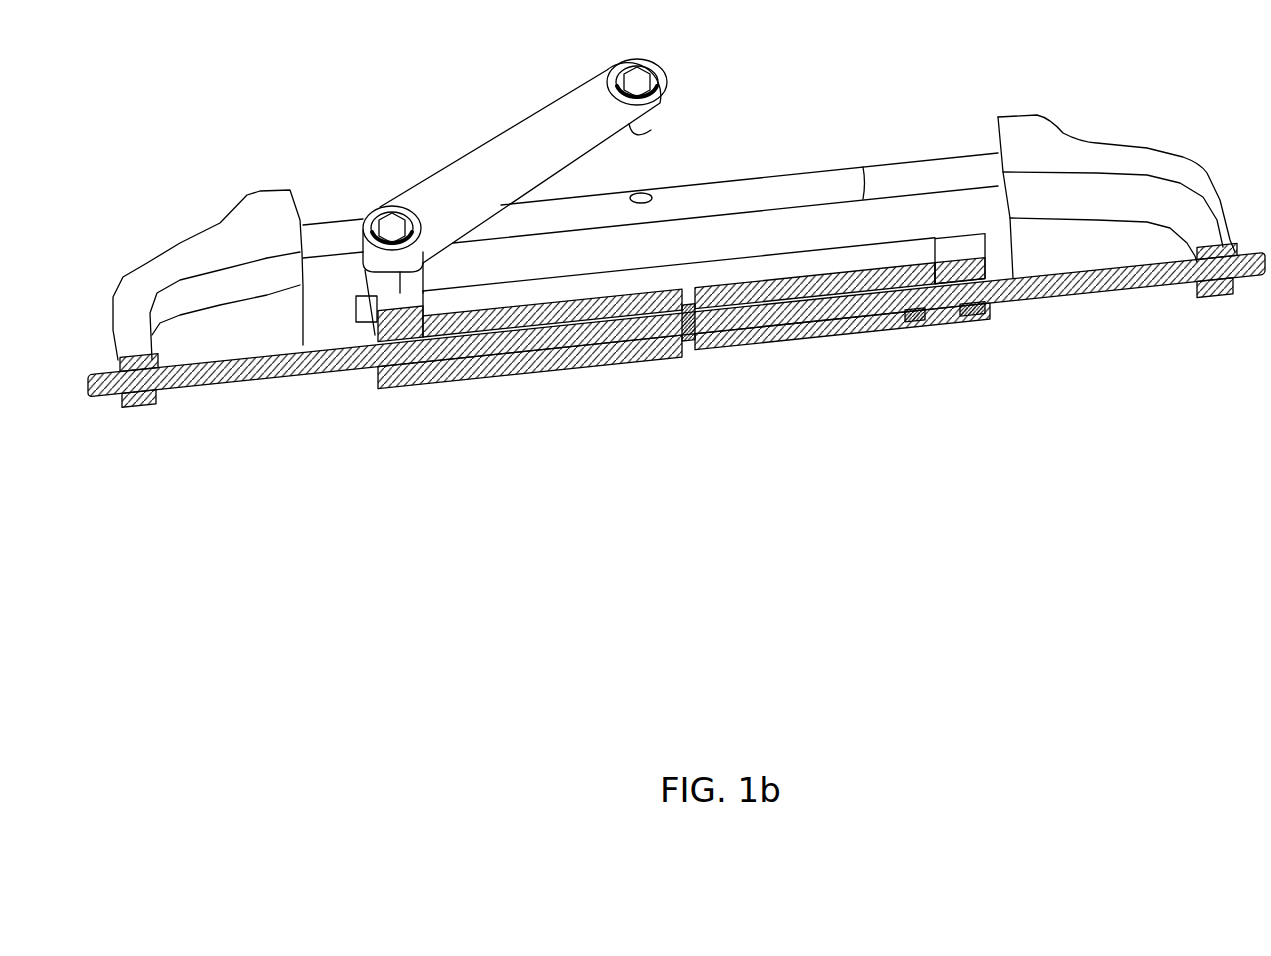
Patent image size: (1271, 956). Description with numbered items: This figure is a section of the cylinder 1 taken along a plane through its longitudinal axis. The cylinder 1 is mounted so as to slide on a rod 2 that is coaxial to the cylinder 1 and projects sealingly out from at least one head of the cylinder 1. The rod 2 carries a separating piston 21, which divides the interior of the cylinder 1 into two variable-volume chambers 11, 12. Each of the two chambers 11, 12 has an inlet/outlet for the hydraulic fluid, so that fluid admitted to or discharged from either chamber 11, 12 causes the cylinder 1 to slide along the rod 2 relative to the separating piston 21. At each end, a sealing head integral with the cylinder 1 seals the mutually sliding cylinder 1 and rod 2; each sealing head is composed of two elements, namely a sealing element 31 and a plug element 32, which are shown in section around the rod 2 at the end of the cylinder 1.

The cylinder 1 is at (547, 411).
The rod 2 is at (268, 394).
The variable-volume chamber 11 is at (620, 350).
The variable-volume chamber 12 is at (840, 330).
The separating piston 21 is at (699, 334).
The sealing element 31 is at (933, 313).
The plug element 32 is at (975, 313).